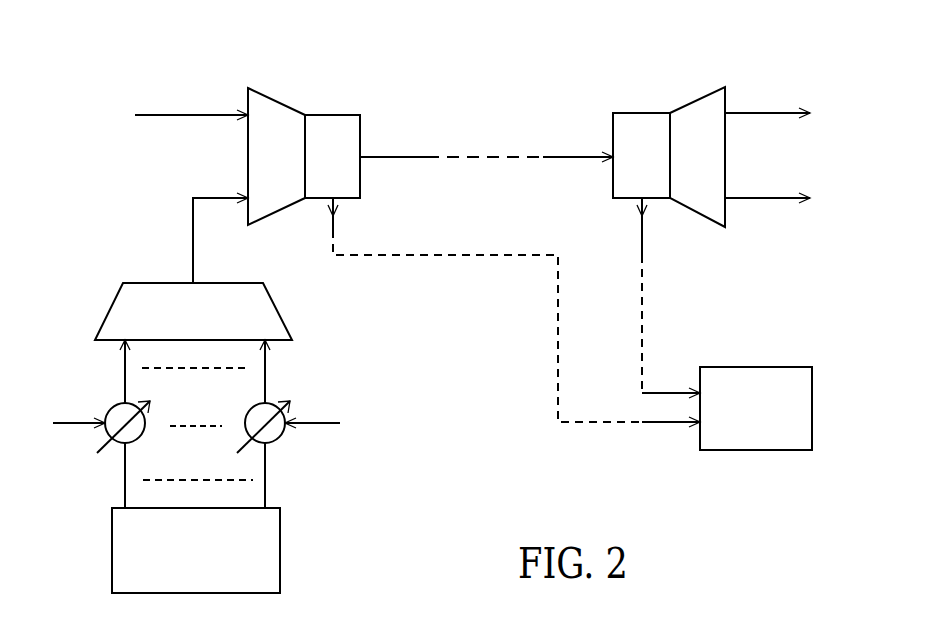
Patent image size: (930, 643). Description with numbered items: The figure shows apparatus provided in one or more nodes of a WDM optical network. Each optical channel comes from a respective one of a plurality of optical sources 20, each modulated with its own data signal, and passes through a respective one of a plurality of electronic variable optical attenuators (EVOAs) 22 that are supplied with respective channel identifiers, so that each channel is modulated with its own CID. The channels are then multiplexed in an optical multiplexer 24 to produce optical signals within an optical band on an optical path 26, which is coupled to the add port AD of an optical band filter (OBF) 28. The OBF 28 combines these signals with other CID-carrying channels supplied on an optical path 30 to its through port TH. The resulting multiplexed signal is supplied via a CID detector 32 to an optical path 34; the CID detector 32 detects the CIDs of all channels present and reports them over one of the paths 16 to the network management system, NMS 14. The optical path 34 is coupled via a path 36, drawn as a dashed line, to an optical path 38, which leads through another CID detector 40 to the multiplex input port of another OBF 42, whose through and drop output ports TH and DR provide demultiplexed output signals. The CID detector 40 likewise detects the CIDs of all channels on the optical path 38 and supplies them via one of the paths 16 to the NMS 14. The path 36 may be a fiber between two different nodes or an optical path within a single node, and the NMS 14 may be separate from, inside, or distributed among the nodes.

The NMS 14 is at (786, 378).
The paths 16 is at (641, 325).
The optical sources 20 is at (276, 553).
The electronic variable optical attenuators (EVOAs) 22 is at (118, 445).
The optical multiplexer 24 is at (266, 311).
The optical path 26 is at (192, 212).
The optical band filter (OBF) 28 is at (290, 120).
The optical path 30 is at (154, 113).
The CID detector 32 is at (356, 124).
The optical path 34 is at (409, 160).
The path 36 is at (495, 160).
The optical path 38 is at (577, 160).
The CID detector 40 is at (618, 124).
The optical band filter (OBF) 42 is at (686, 122).